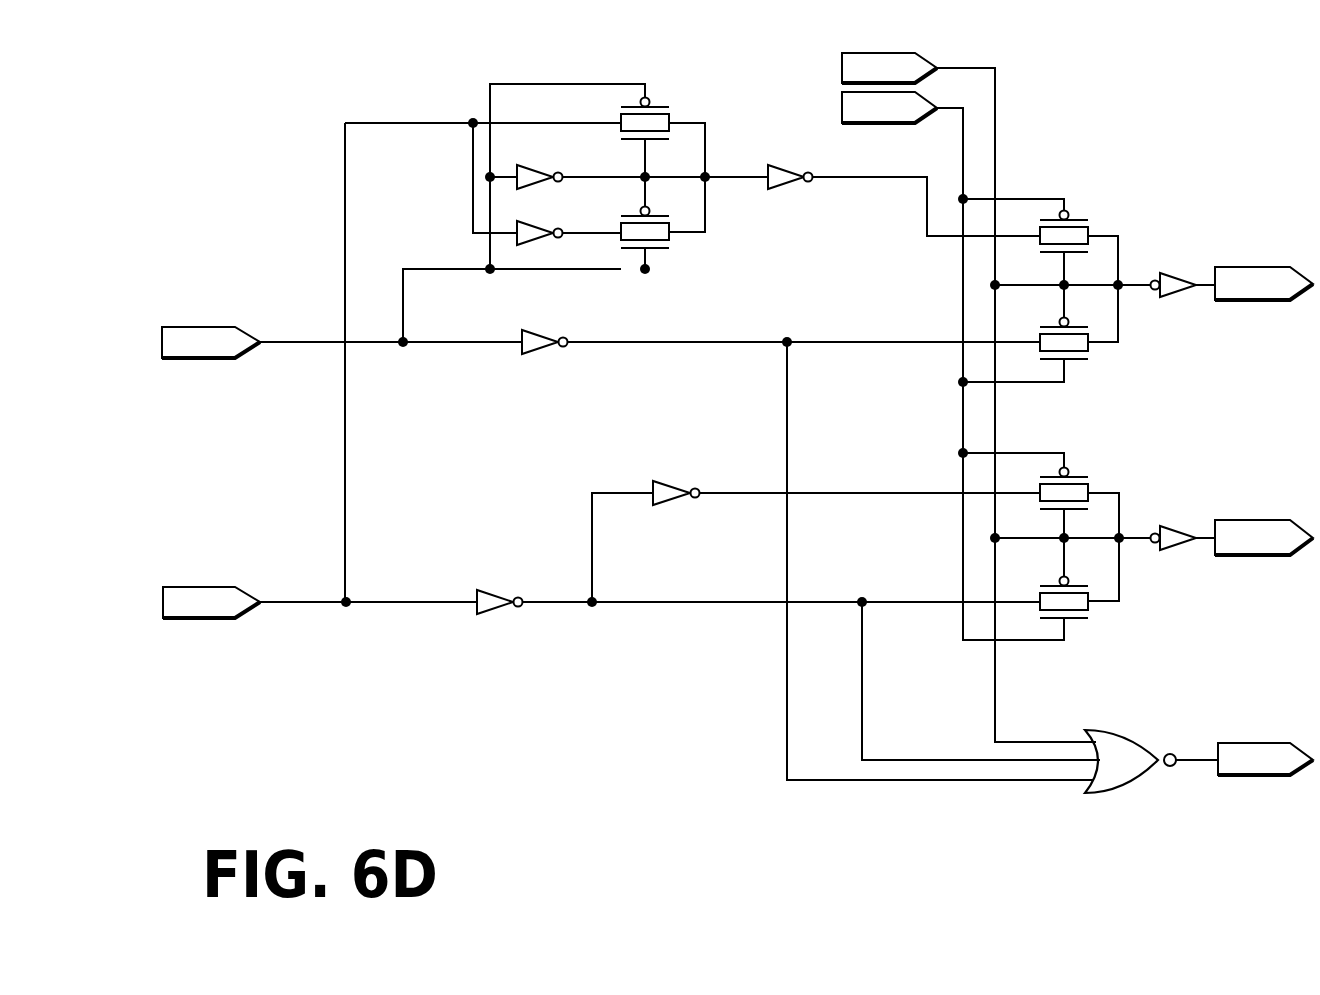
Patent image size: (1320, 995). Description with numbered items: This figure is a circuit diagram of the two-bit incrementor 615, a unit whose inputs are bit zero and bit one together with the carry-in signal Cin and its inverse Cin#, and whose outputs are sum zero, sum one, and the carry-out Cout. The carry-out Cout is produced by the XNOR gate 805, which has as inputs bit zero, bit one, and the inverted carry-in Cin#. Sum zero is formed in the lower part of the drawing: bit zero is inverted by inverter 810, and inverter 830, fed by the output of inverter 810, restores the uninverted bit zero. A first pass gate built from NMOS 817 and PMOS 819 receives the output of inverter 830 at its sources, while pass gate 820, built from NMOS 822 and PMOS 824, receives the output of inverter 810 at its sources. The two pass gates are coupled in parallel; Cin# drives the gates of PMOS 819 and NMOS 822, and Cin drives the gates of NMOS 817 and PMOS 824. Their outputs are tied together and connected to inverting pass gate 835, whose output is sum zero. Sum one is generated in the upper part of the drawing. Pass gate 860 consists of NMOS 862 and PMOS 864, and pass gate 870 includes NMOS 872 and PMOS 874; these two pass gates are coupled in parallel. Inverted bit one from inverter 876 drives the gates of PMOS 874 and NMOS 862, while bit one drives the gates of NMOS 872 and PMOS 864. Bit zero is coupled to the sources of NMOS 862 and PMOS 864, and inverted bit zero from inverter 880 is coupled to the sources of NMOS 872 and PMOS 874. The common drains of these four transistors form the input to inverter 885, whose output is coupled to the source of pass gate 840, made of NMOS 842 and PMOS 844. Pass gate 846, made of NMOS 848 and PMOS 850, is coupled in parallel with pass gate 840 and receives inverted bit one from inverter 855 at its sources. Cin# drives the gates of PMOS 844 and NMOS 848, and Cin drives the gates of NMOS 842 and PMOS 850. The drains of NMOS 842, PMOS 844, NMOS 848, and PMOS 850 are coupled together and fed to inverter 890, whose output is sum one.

The 2-bit incrementor 615 is at (255, 122).
The pass gate 860 is at (678, 113).
The PMOS 864 is at (627, 110).
The NMOS 862 is at (627, 137).
The pass gate 870 is at (680, 244).
The PMOS 874 is at (663, 216).
The NMOS 872 is at (627, 250).
The inverter 876 is at (530, 170).
The inverter 880 is at (530, 226).
The inverter 885 is at (780, 168).
The inverter 855 is at (538, 336).
The inverter 830 is at (670, 486).
The inverter 810 is at (490, 595).
The pass gate 840 is at (1100, 228).
The PMOS 844 is at (1043, 221).
The NMOS 842 is at (1043, 249).
The pass gate 846 is at (1100, 356).
The PMOS 850 is at (1042, 331).
The NMOS 848 is at (1042, 359).
The inverter 890 is at (1165, 272).
The NMOS 817 is at (1103, 478).
The PMOS 819 is at (1044, 510).
The pass gate 820 is at (1105, 618).
The NMOS 822 is at (1044, 590).
The PMOS 824 is at (1044, 618).
The inverting pass gate 835 is at (1172, 550).
The XNOR gate 805 is at (1130, 761).